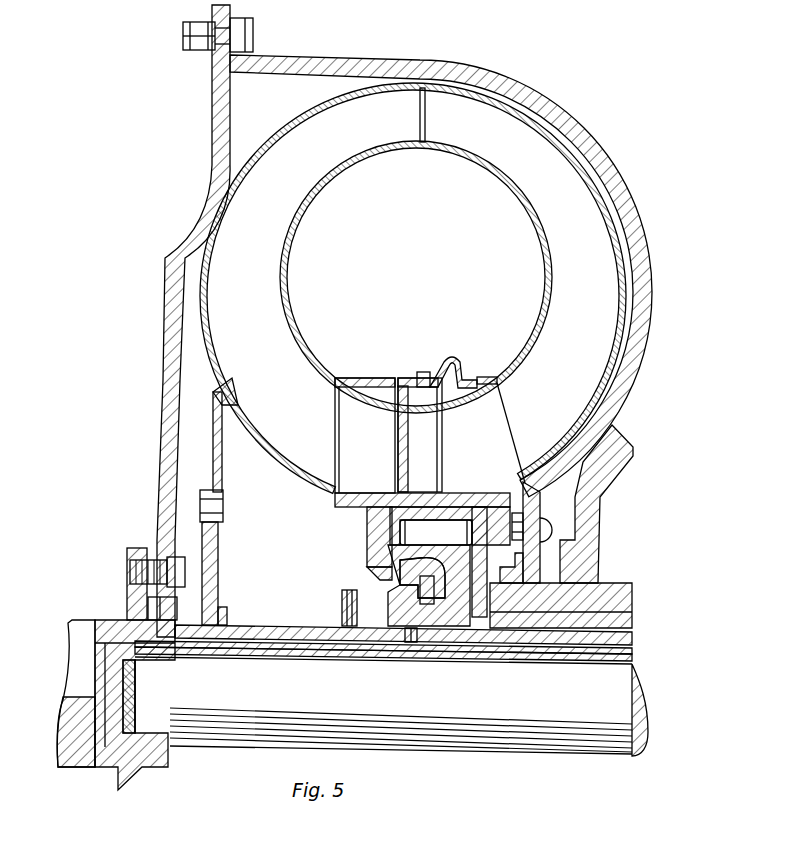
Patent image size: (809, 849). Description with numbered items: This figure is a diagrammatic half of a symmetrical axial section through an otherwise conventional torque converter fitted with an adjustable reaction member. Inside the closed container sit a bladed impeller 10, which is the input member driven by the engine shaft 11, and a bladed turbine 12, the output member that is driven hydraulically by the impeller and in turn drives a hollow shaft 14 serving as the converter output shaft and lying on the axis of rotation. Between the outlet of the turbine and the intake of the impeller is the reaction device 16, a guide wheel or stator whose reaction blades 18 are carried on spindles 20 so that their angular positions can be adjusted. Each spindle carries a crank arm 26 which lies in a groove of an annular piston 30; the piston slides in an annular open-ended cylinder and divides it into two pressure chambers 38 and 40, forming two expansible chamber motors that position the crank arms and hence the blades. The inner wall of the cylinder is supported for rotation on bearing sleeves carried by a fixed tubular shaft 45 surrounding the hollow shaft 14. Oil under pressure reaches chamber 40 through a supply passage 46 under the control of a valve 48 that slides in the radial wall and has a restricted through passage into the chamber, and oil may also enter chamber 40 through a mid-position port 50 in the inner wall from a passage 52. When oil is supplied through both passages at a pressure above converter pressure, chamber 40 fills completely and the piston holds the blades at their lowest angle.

The bladed impeller 10 is at (548, 238).
The engine shaft 11 is at (86, 630).
The bladed turbine 12 is at (288, 204).
The hollow shaft 14 is at (605, 656).
The reaction device 16 is at (431, 370).
The reaction blades 18 is at (433, 419).
The spindles 20 is at (418, 378).
The crank arm 26 is at (418, 590).
The annular piston 30 is at (375, 553).
The pressure chamber 38 is at (323, 518).
The pressure chamber 40 is at (400, 578).
The fixed tubular shaft 45 is at (258, 624).
The supply passage 46 is at (632, 630).
The valve 48 is at (435, 528).
The mid-position port 50 is at (425, 614).
The passage 52 is at (632, 650).